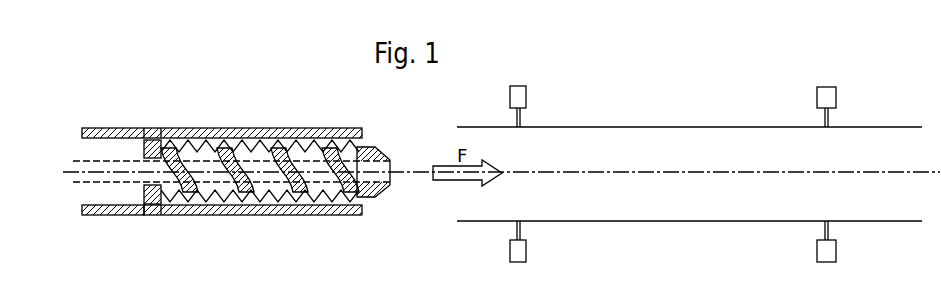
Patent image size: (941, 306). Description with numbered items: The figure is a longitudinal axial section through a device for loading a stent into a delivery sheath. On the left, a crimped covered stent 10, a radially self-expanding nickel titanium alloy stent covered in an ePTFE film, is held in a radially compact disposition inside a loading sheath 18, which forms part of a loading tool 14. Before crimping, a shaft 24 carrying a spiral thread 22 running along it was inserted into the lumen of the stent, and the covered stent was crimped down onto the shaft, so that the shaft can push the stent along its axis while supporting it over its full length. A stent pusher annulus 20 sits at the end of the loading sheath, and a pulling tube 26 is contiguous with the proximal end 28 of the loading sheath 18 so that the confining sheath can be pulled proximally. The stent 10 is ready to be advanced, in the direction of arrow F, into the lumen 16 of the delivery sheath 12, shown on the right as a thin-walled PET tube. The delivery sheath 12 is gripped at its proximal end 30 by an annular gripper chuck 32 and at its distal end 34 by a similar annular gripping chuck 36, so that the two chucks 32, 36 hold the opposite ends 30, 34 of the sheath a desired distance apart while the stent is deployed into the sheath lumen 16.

The crimped covered stent 10 is at (270, 138).
The delivery sheath 12 is at (683, 127).
The loading tool 14 is at (107, 112).
The lumen 16 is at (747, 159).
The loading sheath 18 is at (273, 212).
The stent pusher annulus 20 is at (154, 139).
The spiral thread 22 is at (233, 205).
The shaft 24 is at (92, 162).
The pulling tube 26 is at (117, 215).
The proximal end of the loading sheath 28 is at (145, 138).
The proximal end of the delivery sheath 30 is at (519, 127).
The annular gripper chuck 32 is at (517, 87).
The distal end of the delivery sheath 34 is at (827, 127).
The annular gripping chuck 36 is at (827, 95).